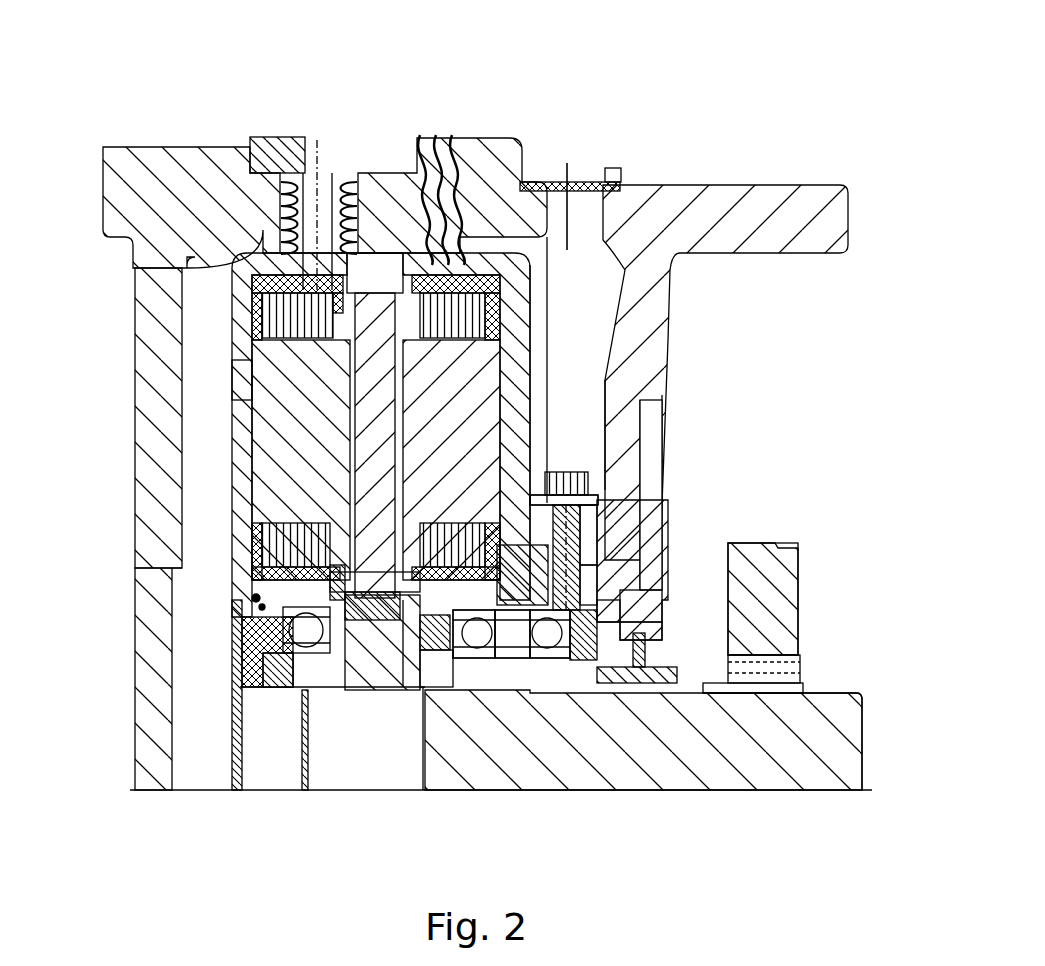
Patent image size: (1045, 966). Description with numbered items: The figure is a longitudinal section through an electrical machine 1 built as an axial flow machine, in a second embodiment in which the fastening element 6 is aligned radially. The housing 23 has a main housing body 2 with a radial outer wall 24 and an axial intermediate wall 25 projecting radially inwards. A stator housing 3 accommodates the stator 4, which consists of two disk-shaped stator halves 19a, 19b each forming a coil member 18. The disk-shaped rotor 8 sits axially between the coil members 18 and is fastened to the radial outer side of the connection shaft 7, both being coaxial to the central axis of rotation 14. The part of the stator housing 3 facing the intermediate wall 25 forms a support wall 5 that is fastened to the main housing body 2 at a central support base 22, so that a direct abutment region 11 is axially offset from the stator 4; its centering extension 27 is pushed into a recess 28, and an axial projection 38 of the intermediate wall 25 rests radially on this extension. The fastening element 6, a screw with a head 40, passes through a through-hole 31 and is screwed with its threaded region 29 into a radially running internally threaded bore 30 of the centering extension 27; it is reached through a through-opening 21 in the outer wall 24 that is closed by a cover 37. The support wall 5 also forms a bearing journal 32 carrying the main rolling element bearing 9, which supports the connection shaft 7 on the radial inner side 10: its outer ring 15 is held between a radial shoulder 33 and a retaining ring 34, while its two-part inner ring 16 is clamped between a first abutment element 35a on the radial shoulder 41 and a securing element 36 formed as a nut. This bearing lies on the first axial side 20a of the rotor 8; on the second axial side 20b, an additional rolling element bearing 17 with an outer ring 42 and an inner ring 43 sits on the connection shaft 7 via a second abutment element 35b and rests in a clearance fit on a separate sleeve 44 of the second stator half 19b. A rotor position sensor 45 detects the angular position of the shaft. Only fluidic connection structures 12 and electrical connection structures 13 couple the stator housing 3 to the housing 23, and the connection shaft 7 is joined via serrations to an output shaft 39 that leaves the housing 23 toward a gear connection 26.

The electrical machine 1 is at (400, 76).
The main housing body 2 is at (772, 196).
The stator housing 3 is at (357, 139).
The stator 4 is at (198, 461).
The support wall 5 is at (607, 382).
The fastening element 6 is at (608, 543).
The connection shaft 7 is at (380, 692).
The rotor 8 is at (300, 380).
The main rolling element bearing 9 is at (600, 690).
The radial inner side 10 is at (540, 660).
The direct abutment region 11 is at (640, 538).
The fluidic connection structure 12 is at (272, 150).
The electrical connection structure 13 is at (395, 225).
The central axis of rotation 14 is at (782, 790).
The outer ring 15 is at (642, 585).
The inner ring 16 is at (482, 658).
The additional rolling element bearing 17 is at (300, 652).
The coil member 18 is at (612, 343).
The first stator half 19a is at (651, 495).
The second stator half 19b is at (242, 380).
The first axial side 20a is at (405, 617).
The second axial side 20b is at (210, 668).
The through-opening 21 is at (578, 178).
The support base 22 is at (763, 599).
The housing 23 is at (203, 178).
The radial outer wall 24 is at (657, 197).
The intermediate wall 25 is at (650, 300).
The gear connection 26 is at (820, 640).
The centering extension 27 is at (637, 598).
The recess 28 is at (597, 518).
The threaded region 29 is at (555, 560).
The internally threaded bore 30 is at (505, 660).
The through-hole 31 is at (605, 578).
The bearing journal 32 is at (440, 655).
The radial shoulder 33 is at (430, 520).
The retaining ring 34 is at (668, 597).
The first abutment element 35a is at (422, 580).
The second abutment element 35b is at (362, 612).
The securing element 36 is at (645, 643).
The cover 37 is at (562, 182).
The axial projection 38 is at (598, 497).
The output shaft 39 is at (835, 745).
The head 40 is at (562, 472).
The radial shoulder 41 is at (452, 660).
The outer ring 42 is at (258, 606).
The inner ring 43 is at (278, 672).
The sleeve 44 is at (254, 596).
The rotor position sensor 45 is at (245, 655).